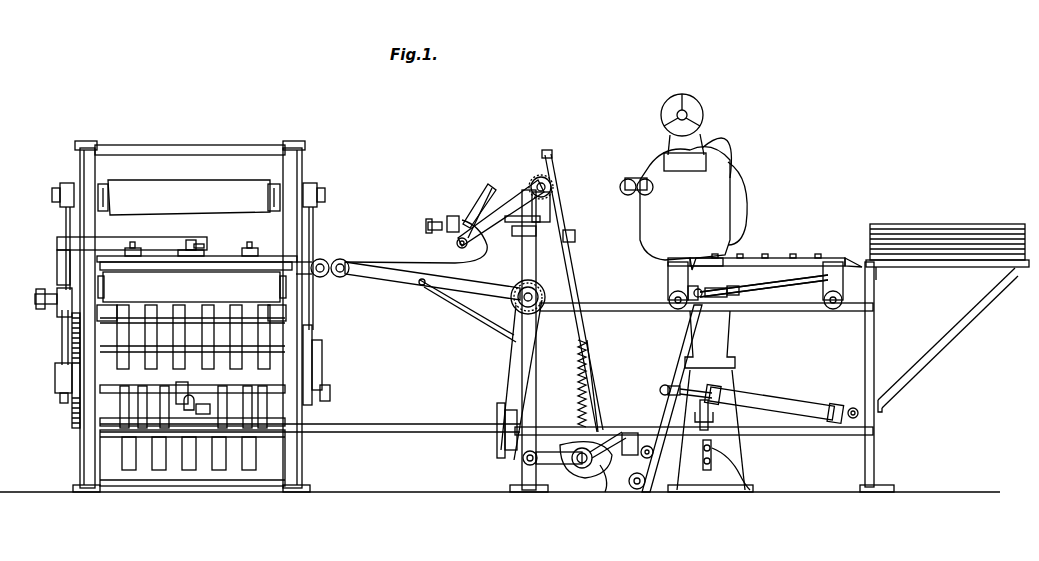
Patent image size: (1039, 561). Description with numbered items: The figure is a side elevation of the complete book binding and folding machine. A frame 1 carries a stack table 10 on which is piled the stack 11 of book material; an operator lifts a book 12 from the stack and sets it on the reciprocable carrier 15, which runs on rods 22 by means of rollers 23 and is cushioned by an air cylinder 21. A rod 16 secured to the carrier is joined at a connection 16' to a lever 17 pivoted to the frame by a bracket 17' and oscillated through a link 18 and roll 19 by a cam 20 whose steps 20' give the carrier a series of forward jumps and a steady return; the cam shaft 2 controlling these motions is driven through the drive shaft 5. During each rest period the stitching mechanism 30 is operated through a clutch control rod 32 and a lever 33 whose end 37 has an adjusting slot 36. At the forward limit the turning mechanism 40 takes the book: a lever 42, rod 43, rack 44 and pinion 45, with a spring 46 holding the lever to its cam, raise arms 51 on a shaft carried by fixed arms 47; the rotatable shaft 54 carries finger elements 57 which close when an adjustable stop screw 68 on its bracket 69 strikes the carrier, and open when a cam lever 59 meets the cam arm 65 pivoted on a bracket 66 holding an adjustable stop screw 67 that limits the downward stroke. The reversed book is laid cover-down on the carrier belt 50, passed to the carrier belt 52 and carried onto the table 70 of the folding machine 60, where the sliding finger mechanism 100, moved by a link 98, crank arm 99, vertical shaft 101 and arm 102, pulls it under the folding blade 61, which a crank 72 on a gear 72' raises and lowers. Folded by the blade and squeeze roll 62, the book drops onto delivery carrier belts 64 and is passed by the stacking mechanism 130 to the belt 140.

The frame 1 is at (80, 162).
The cam shaft 2 is at (571, 472).
The drive shaft 5 is at (412, 410).
The stack table 10 is at (922, 272).
The stack 11 is at (956, 224).
The book 12 is at (393, 260).
The reciprocable carrier 15 is at (785, 251).
The rod 16 is at (764, 289).
The connection 16' is at (726, 310).
The lever 17 is at (672, 398).
The bracket 17' is at (646, 494).
The link 18 is at (619, 432).
The roll 19 is at (537, 468).
The cam 20 is at (608, 474).
The steps 20' is at (616, 498).
The air cylinder 21 is at (799, 395).
The rods 22 is at (782, 308).
The rollers 23 is at (670, 301).
The stitching mechanism 30 is at (683, 182).
The clutch control rod 32 is at (718, 420).
The lever 33 is at (690, 470).
The slot 36 is at (722, 478).
The end 37 is at (748, 490).
The turning mechanism 40 is at (519, 152).
The lever 42 is at (536, 433).
The rod 43 is at (588, 368).
The rack 44 is at (572, 214).
The pinion 45 is at (541, 177).
The spring 46 is at (590, 290).
The arms 47 is at (522, 266).
The carrier belt 50 is at (375, 280).
The arms 51 is at (520, 190).
The carrier belt 52 is at (318, 262).
The rotatable shaft 54 is at (460, 246).
The finger elements 57 is at (485, 230).
The cam lever 59 is at (476, 200).
The folding machine 60 is at (243, 132).
The folding blade 61 is at (189, 197).
The squeeze roll 62 is at (192, 287).
The delivery carrier belts 64 is at (197, 310).
The cam arm 65 is at (490, 187).
The bracket 66 is at (526, 236).
The adjustable stop screw 67 is at (536, 216).
The adjustable stop screw 68 is at (435, 231).
The bracket 69 is at (450, 217).
The table 70 is at (273, 261).
The crank 72 is at (180, 294).
The gear 72' is at (43, 391).
The link 98 is at (35, 301).
The crank arm 99 is at (58, 312).
The sliding finger mechanism 100 is at (206, 246).
The vertical shaft 101 is at (62, 349).
The arm 102 is at (149, 240).
The stacking mechanism 130 is at (115, 418).
The belt 140 is at (213, 473).